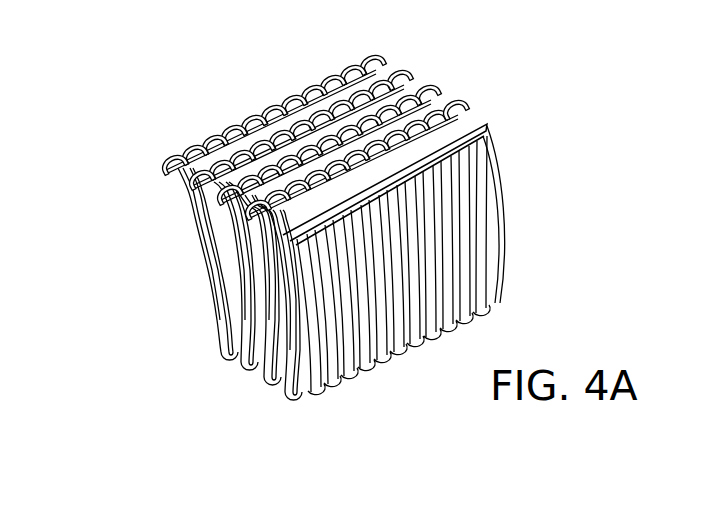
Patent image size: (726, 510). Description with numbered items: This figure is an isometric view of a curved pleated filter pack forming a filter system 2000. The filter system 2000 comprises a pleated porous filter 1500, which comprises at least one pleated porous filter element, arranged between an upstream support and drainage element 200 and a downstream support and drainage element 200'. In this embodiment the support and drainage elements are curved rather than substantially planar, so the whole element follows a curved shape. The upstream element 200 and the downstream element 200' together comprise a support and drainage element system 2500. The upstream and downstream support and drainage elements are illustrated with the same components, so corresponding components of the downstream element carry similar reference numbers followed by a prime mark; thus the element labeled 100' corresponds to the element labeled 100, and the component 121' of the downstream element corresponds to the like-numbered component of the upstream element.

The filter system 2000 is at (162, 89).
The hook element 100 is at (337, 118).
The upstream S&D element 200 is at (509, 94).
The pleated porous filter 1500 is at (486, 131).
The S&D element system 2500 is at (224, 356).
The hook element 100' is at (222, 320).
The downstream S&D element 200' is at (305, 316).
The finger 121' is at (393, 265).